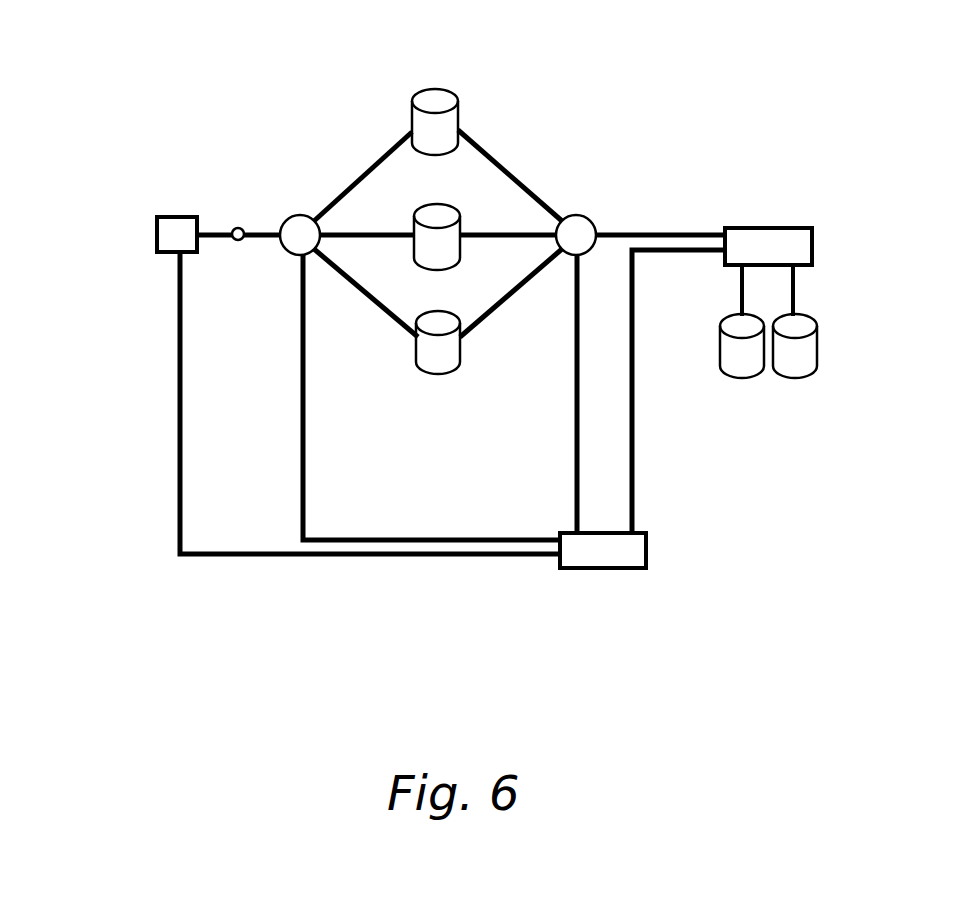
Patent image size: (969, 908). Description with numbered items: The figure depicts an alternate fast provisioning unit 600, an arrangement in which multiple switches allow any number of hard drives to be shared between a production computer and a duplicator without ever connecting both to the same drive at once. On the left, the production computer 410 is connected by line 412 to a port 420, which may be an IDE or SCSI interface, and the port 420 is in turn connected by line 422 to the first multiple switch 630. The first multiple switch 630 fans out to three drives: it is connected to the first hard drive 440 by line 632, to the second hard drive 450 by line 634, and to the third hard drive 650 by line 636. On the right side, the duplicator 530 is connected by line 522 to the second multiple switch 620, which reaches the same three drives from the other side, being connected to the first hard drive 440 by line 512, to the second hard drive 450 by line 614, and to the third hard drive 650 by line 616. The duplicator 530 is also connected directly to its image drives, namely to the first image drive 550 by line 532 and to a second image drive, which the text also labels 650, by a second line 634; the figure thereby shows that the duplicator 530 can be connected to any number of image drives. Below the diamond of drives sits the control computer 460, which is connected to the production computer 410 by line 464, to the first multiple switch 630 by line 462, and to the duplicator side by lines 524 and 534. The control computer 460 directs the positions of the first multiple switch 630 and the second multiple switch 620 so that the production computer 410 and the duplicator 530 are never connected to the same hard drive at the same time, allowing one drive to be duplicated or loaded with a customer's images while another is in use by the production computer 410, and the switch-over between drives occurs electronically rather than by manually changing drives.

The production computer 410 is at (157, 232).
The line 412 is at (215, 238).
The port 420 is at (236, 227).
The line 422 is at (265, 233).
The first multiple switch 630 is at (300, 235).
The line 632 is at (364, 172).
The first hard drive 440 is at (440, 88).
The second hard drive 450 is at (415, 220).
The line 512 is at (531, 194).
The line 614 is at (505, 233).
The second multiple switch 620 is at (578, 235).
The line 522 is at (659, 233).
The duplicator 530 is at (773, 228).
The line 634 is at (367, 237).
The line 636 is at (367, 297).
The line 616 is at (513, 293).
The third hard drive 650 is at (438, 375).
The line 462 is at (302, 398).
The line 464 is at (180, 405).
The line 524 is at (577, 393).
The line 534 is at (632, 442).
The control computer 460 is at (646, 548).
The line 532 is at (742, 290).
The first image drive 550 is at (720, 345).
The alternate fast provisioning unit 600 is at (274, 640).